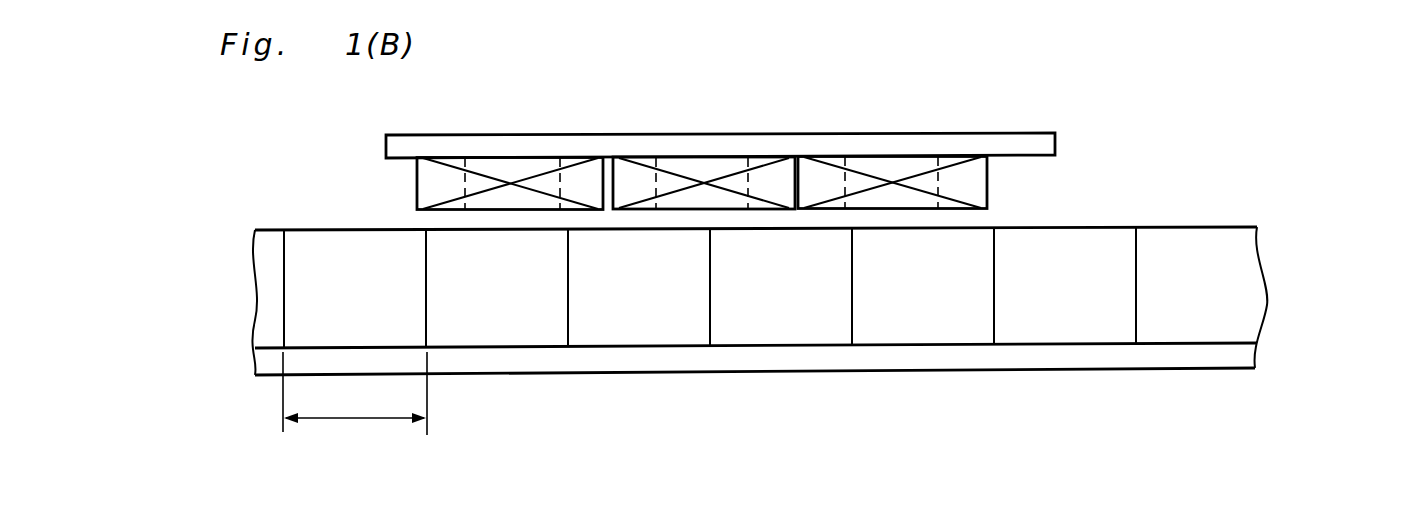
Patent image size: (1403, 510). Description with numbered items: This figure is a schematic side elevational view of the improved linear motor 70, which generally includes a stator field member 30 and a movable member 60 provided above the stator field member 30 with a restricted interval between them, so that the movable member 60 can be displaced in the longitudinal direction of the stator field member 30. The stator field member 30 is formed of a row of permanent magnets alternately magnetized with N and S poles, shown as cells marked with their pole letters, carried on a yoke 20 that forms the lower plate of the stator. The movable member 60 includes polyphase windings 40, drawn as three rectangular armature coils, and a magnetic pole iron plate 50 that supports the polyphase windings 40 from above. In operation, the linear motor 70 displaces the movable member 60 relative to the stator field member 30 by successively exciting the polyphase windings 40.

The yoke 20 is at (307, 362).
The stator field member 30 is at (1267, 305).
The polyphase windings 40 is at (525, 170).
The magnetic pole iron plate 50 is at (1033, 142).
The movable member 60 is at (1077, 130).
The linear motor 70 is at (1290, 143).